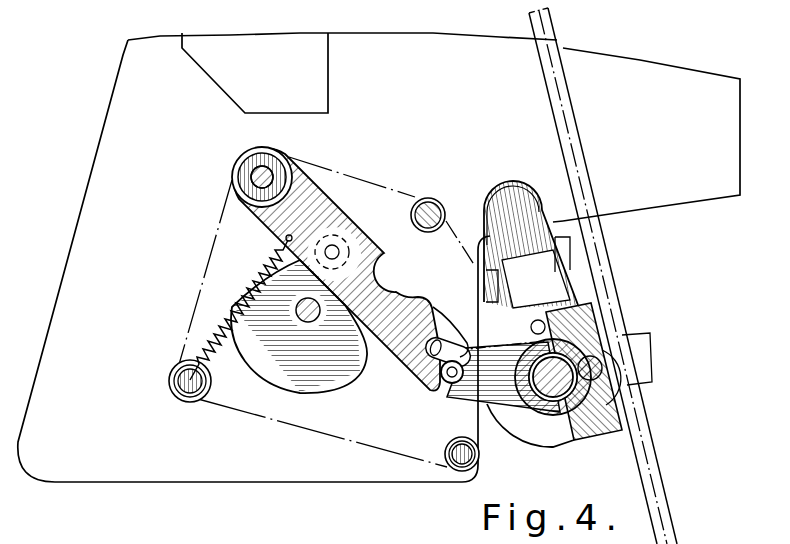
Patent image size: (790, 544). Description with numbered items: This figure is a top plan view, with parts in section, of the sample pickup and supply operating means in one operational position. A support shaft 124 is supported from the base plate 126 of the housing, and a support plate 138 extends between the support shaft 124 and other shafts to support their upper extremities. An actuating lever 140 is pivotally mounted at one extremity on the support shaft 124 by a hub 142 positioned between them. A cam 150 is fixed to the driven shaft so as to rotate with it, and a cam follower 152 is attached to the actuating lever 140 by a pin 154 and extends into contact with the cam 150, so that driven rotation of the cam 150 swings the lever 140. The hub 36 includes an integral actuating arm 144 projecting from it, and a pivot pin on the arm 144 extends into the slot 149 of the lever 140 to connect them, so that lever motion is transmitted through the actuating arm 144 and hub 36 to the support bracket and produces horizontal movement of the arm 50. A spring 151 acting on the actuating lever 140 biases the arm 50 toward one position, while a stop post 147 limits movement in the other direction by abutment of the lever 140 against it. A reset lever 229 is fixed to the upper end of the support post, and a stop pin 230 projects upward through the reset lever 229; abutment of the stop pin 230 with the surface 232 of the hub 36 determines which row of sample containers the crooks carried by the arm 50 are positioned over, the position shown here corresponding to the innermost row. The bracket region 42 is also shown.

The base plate 126 is at (182, 487).
The support plate 138 is at (205, 262).
The support shaft 124 is at (255, 172).
The hub 142 is at (278, 164).
The actuating lever 140 is at (332, 218).
The cam follower 152 is at (358, 237).
The pin 154 is at (340, 252).
The stop post 147 is at (433, 200).
The slot 149 is at (447, 322).
The spring 151 is at (227, 308).
The cam 150 is at (340, 393).
The surface 232 is at (491, 373).
The actuating arm 144 is at (494, 395).
The reset lever 229 is at (498, 182).
The bracket 42 is at (531, 244).
The stop pin 230 is at (537, 318).
The hub 36 is at (593, 324).
The arm 50 is at (653, 435).